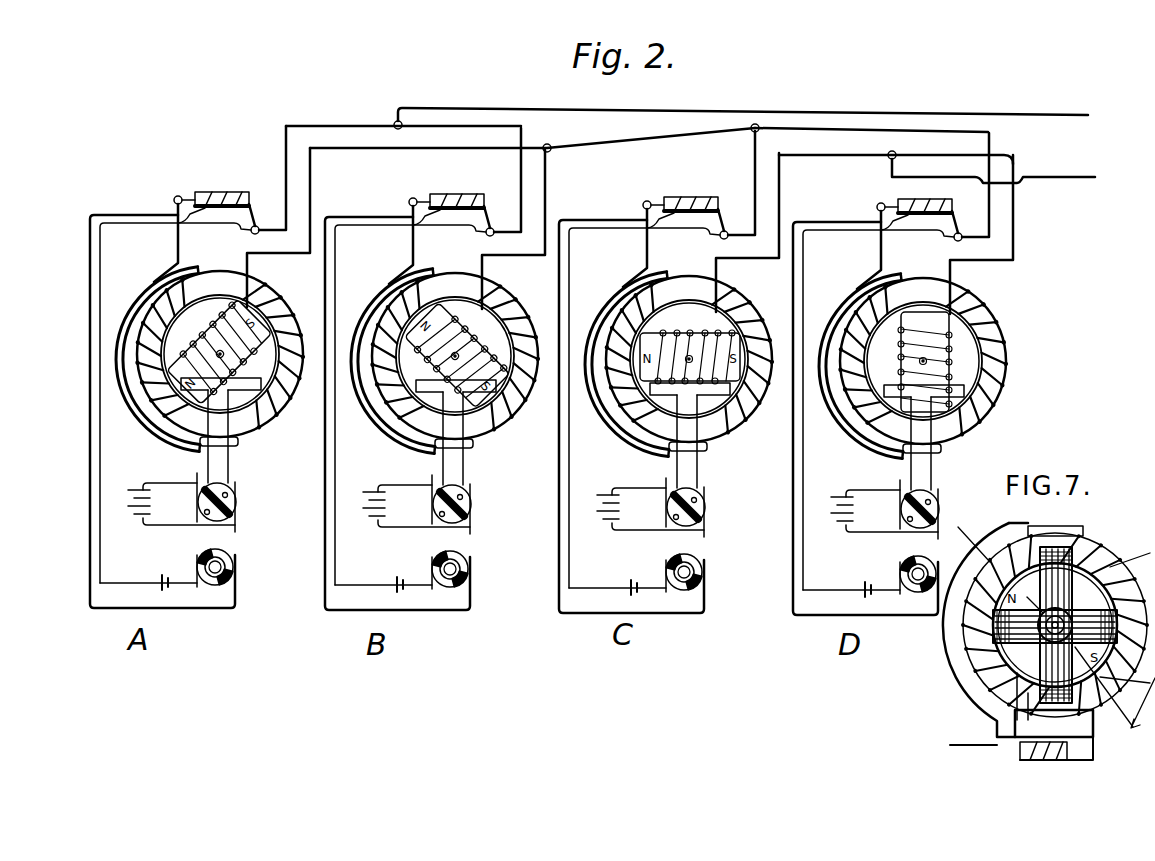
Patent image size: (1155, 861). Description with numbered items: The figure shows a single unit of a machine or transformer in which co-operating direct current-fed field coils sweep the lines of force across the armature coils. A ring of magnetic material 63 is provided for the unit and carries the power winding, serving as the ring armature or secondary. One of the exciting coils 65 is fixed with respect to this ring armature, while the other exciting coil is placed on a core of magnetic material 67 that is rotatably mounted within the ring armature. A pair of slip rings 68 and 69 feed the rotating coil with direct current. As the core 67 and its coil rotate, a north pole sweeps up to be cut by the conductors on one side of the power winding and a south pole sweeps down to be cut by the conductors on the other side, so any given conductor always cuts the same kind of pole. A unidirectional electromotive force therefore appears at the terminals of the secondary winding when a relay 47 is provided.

The exciting coil 65 is at (1067, 548).
The ring of magnetic material 63 is at (1097, 553).
The slip ring 68 is at (1068, 606).
The slip ring 69 is at (1064, 616).
The core of magnetic material 67 is at (1080, 677).
The relay 47 is at (1008, 767).